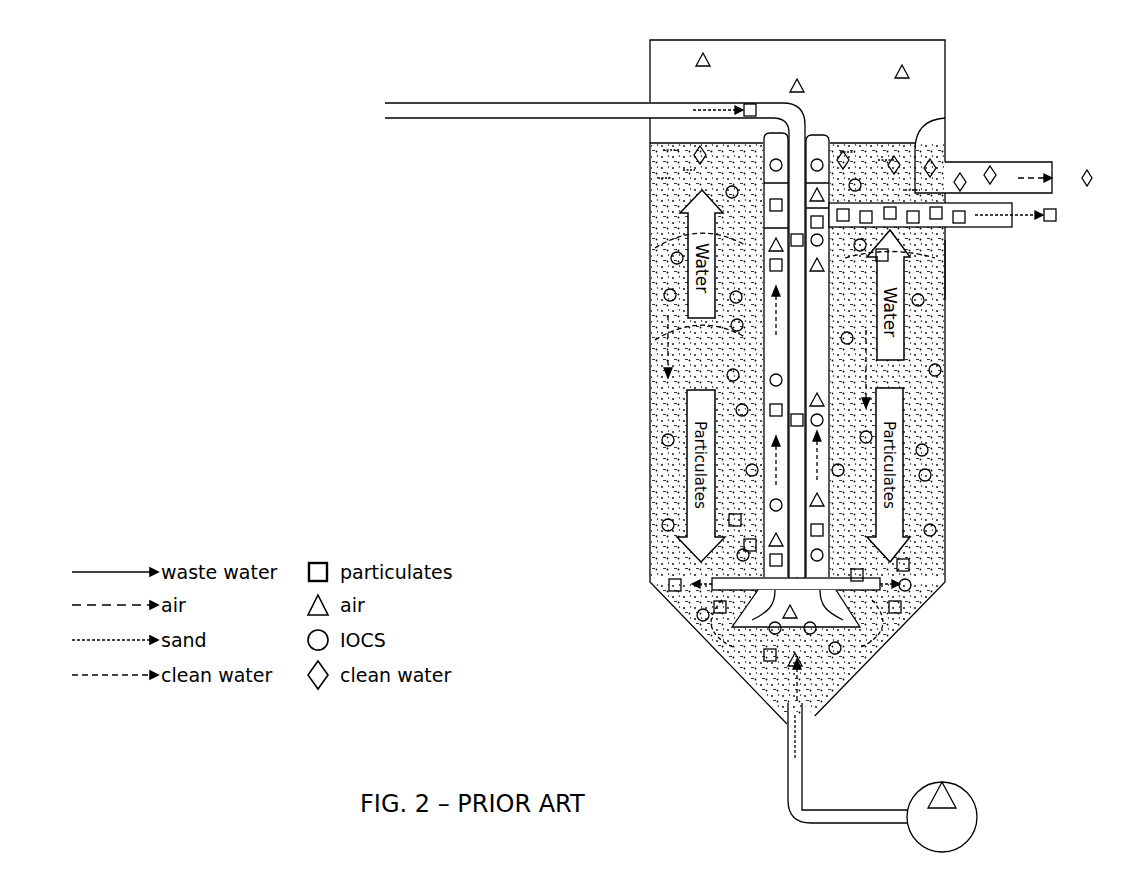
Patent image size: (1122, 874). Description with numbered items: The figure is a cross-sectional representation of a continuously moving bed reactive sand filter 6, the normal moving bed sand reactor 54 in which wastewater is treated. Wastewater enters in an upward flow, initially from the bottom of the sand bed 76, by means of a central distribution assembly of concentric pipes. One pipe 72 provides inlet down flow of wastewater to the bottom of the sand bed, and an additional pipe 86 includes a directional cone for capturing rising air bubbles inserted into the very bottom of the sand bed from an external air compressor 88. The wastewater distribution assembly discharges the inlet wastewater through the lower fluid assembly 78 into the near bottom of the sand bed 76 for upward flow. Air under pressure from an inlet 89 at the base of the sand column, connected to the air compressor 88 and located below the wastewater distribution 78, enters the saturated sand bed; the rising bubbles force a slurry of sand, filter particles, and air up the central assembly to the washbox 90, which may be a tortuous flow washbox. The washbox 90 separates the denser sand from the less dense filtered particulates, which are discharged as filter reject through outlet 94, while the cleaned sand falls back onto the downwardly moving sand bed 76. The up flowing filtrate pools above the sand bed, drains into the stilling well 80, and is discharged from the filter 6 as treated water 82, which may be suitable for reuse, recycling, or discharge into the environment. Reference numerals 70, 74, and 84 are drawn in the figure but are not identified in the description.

The moving bed reactive sand filter 6 is at (463, 52).
The moving bed sand reactor 54 is at (985, 326).
The housing 70 is at (947, 62).
The pipe 72 is at (795, 282).
The vessel wall 74 is at (648, 326).
The sand bed 76 is at (946, 278).
The lower fluid assembly 78 is at (895, 622).
The stilling well 80 is at (946, 121).
The treated water 82 is at (925, 152).
The clean water outlet 84 is at (1025, 162).
The additional pipe 86 is at (830, 346).
The air compressor 88 is at (972, 792).
The inlet 89 is at (788, 780).
The washbox 90 is at (775, 218).
The outlet 94 is at (985, 228).